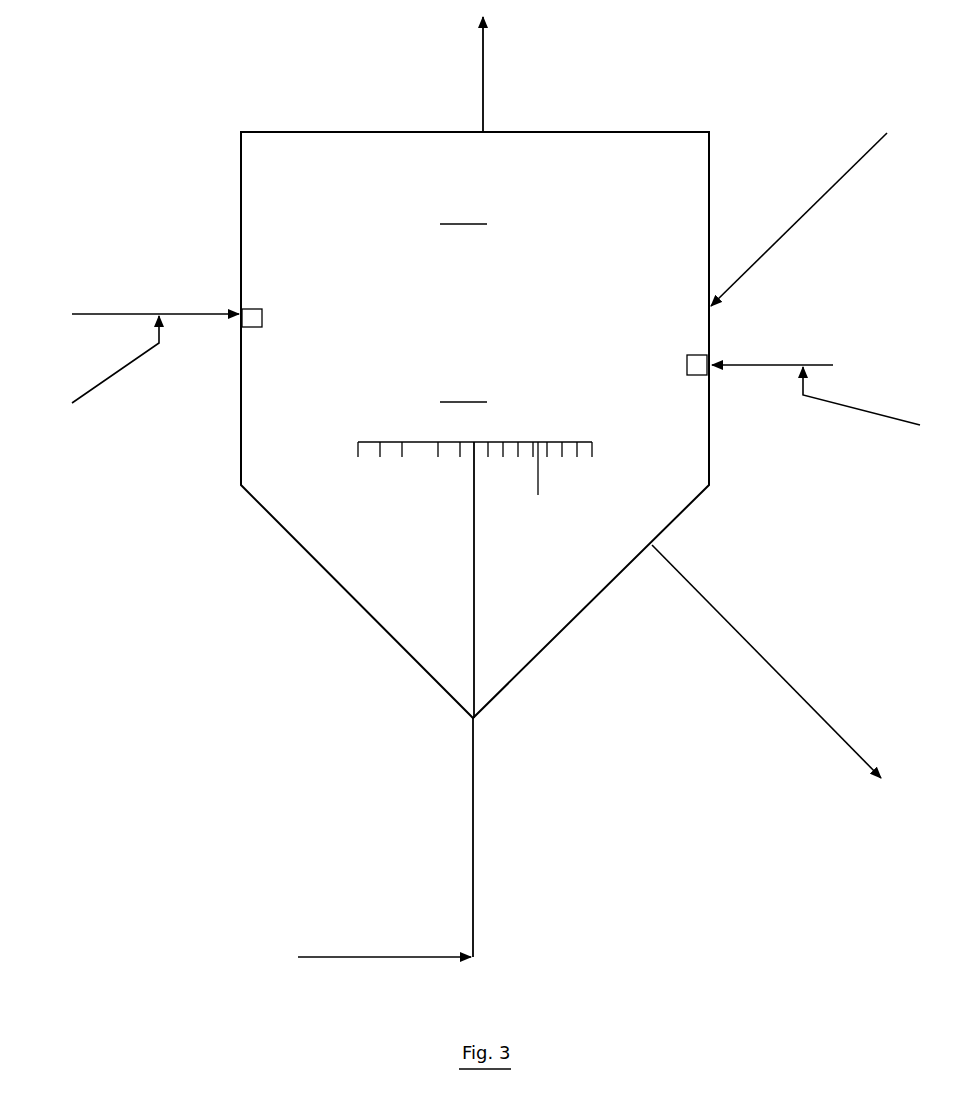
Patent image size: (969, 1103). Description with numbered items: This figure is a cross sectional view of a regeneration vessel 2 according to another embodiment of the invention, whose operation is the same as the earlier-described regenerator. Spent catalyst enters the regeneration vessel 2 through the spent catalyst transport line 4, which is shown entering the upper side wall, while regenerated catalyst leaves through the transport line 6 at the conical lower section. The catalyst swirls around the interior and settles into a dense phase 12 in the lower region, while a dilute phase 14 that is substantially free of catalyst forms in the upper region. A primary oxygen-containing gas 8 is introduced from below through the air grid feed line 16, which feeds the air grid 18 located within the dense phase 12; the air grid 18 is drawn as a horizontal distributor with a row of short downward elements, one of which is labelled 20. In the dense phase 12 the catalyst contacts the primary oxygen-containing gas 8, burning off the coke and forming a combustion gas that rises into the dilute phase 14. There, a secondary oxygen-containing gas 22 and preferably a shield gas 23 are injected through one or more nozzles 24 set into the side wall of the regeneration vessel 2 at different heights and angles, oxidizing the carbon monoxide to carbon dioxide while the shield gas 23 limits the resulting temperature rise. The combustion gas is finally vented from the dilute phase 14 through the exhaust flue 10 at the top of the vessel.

The regeneration vessel 2 is at (241, 262).
The spent catalyst transport line 4 is at (768, 250).
The transport line 6 is at (765, 660).
The primary oxygen-containing gas 8 is at (473, 833).
The exhaust flue 10 is at (483, 71).
The dense phase 12 is at (463, 386).
The dilute phase 14 is at (463, 209).
The air grid feed line 16 is at (474, 543).
The air grid 18 is at (428, 442).
The distributor nozzle 20 is at (538, 495).
The secondary oxygen-containing gas 22 is at (453, 341).
The shield gas 23 is at (490, 385).
The nozzles 24 is at (238, 320).